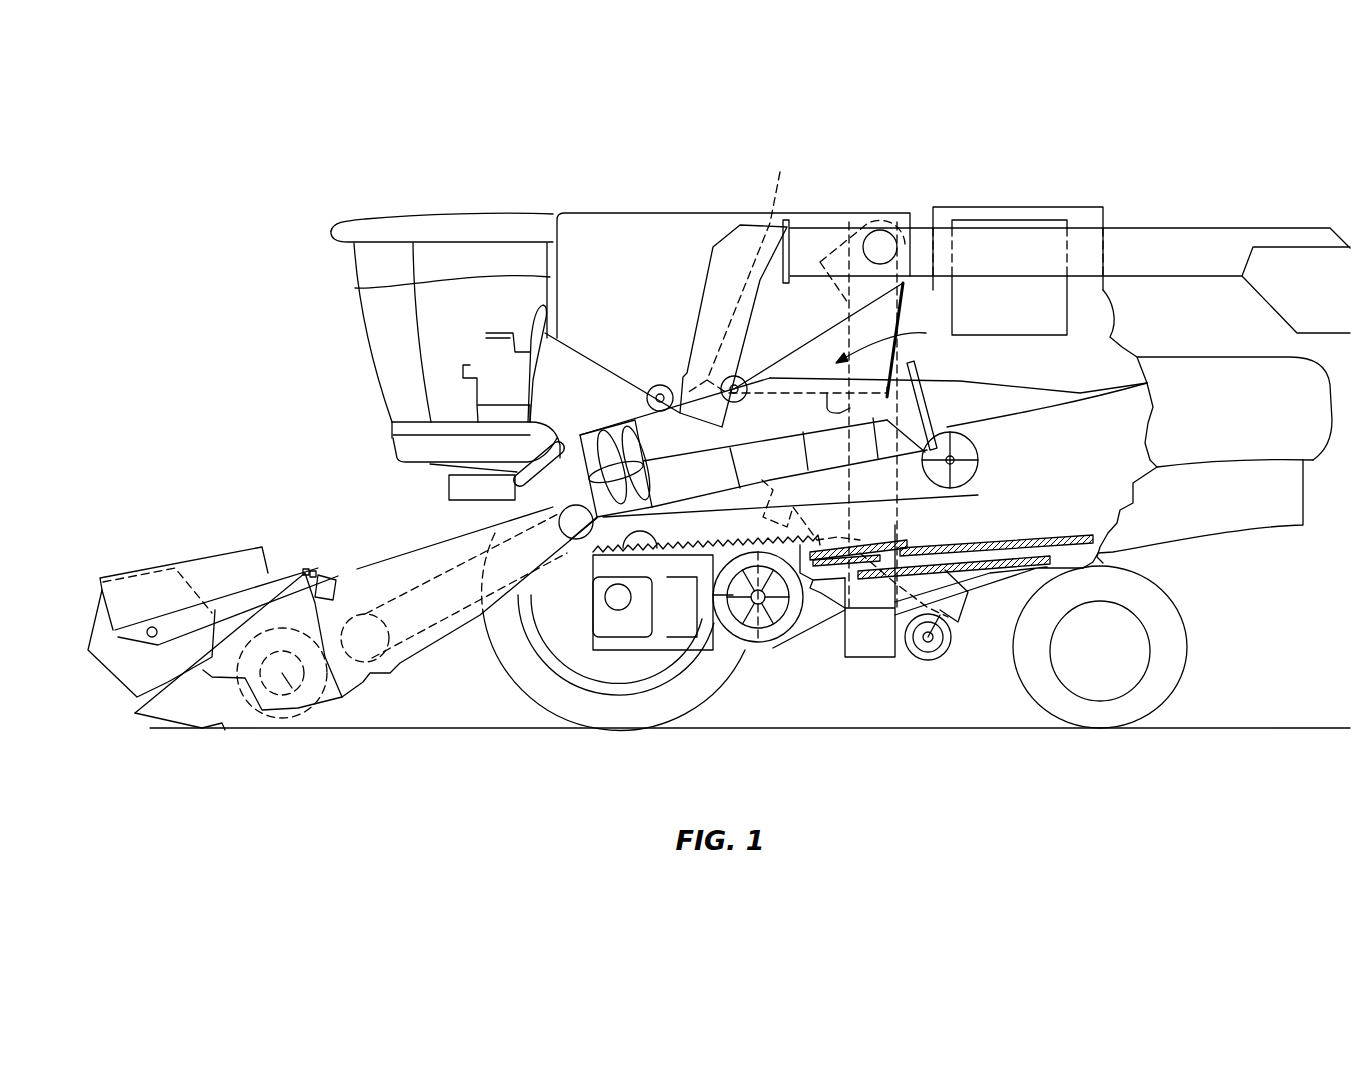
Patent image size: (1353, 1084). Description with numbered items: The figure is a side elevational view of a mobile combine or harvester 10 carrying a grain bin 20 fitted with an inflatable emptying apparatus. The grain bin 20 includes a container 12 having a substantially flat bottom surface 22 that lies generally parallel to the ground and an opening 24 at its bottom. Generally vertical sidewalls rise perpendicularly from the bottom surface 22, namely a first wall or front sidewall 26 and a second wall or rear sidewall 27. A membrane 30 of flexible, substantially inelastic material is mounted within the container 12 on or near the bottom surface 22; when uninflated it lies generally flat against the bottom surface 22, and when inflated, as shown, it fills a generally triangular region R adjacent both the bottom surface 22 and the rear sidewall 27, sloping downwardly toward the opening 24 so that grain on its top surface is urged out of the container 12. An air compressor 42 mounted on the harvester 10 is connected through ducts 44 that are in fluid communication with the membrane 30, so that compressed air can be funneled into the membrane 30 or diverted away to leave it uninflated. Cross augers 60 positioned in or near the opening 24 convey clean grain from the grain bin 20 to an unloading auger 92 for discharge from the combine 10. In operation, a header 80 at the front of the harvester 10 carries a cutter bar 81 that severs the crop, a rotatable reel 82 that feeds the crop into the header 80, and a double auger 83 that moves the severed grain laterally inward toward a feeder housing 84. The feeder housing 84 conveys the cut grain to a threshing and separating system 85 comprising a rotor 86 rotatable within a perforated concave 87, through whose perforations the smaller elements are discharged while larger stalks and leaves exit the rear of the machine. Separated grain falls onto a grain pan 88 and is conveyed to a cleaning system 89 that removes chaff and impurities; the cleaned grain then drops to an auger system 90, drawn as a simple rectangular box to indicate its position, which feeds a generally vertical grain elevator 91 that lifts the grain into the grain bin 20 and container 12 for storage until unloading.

The mobile combine or harvester 10 is at (212, 176).
The container 12 is at (688, 208).
The grain bin 20 is at (633, 230).
The bottom surface 22 is at (880, 403).
The opening 24 is at (787, 277).
The first wall or first sidewall 26 is at (392, 290).
The second wall or second sidewall 27 is at (880, 363).
The membrane 30 is at (880, 317).
The air compressor 42 is at (457, 483).
The ducts 44 is at (527, 462).
The augers 60 is at (665, 385).
The header 80 is at (193, 562).
The cutter bar 81 is at (175, 707).
The rotatable reel 82 is at (108, 673).
The double auger 83 is at (312, 718).
The feeder housing 84 is at (390, 680).
The threshing and separating system 85 is at (615, 408).
The rotor 86 is at (607, 503).
The perforated concave 87 is at (680, 485).
The grain pan 88 is at (672, 488).
The cleaning system 89 is at (760, 668).
The auger system 90 is at (867, 670).
The grain elevator 91 is at (877, 493).
The unloading auger 92 is at (1187, 228).
The region R is at (891, 339).